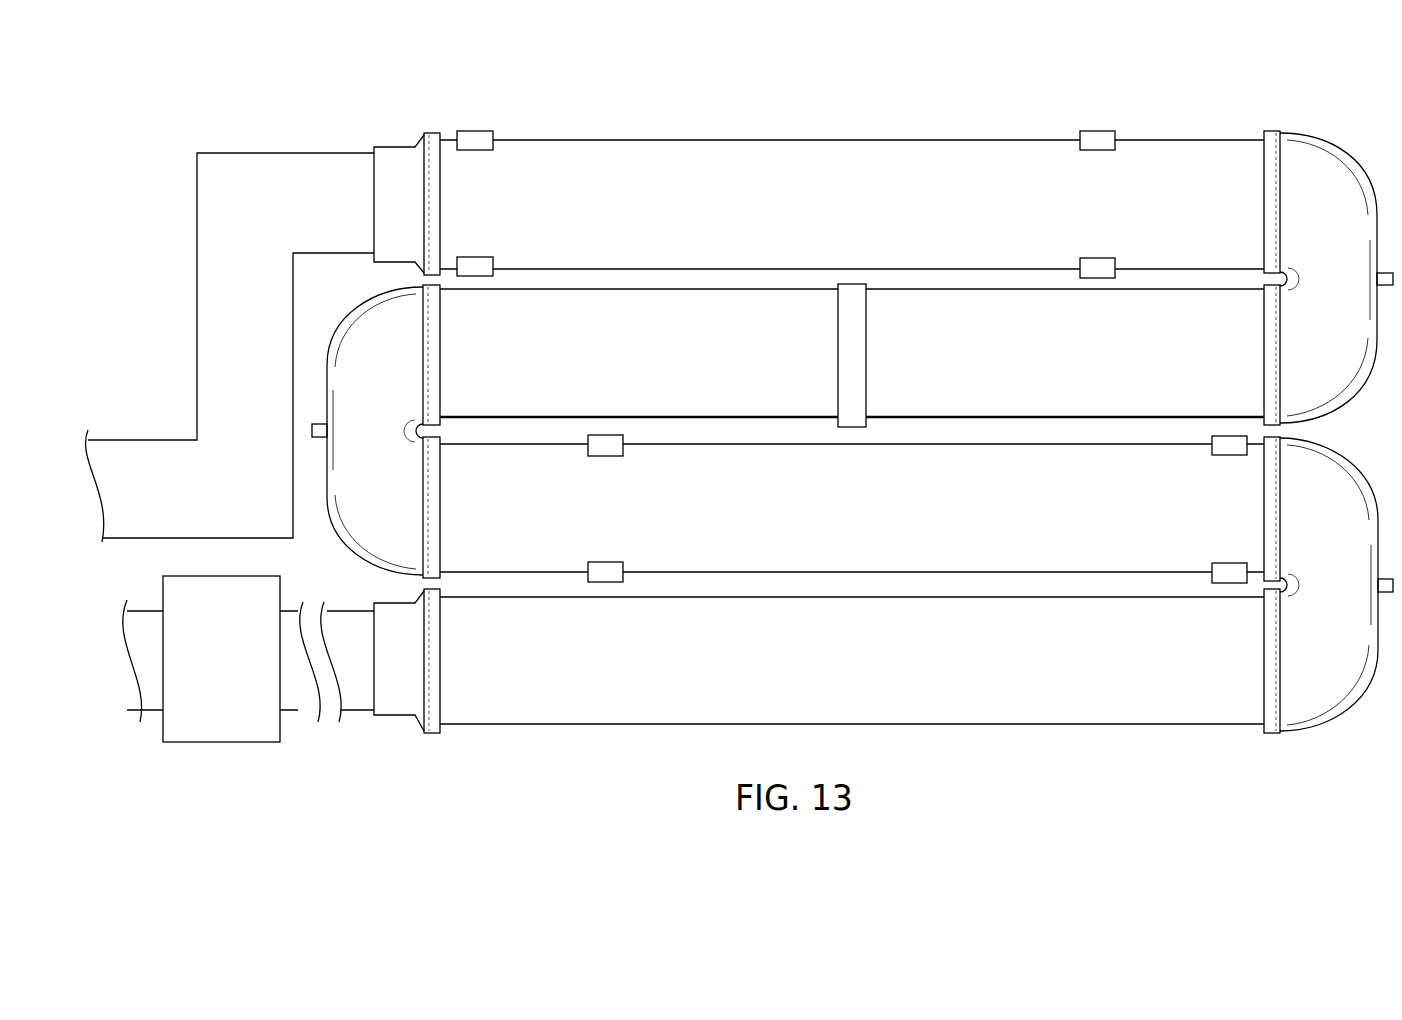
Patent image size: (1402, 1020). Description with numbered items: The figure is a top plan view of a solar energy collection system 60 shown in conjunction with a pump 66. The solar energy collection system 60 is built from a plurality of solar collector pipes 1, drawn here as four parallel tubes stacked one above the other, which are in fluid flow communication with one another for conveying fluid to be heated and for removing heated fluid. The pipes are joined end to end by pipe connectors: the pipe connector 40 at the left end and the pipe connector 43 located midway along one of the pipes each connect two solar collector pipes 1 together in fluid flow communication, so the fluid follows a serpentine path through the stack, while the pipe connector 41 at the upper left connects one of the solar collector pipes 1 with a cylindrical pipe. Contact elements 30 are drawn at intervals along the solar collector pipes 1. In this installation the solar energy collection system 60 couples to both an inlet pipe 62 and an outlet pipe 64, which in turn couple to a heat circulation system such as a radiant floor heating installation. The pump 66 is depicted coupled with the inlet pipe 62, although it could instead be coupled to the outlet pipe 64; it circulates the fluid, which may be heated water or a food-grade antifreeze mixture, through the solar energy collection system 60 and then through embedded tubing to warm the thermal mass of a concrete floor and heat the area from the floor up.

The solar collector pipe 1 is at (773, 140).
The contact blocks 30 is at (1095, 133).
The pipe connector 40 is at (360, 552).
The pipe connector 41 is at (433, 133).
The pipe connector 43 is at (840, 358).
The solar energy collection system 60 is at (384, 130).
The inlet pipe 62 is at (357, 711).
The outlet pipe 64 is at (223, 328).
The pump 66 is at (255, 672).